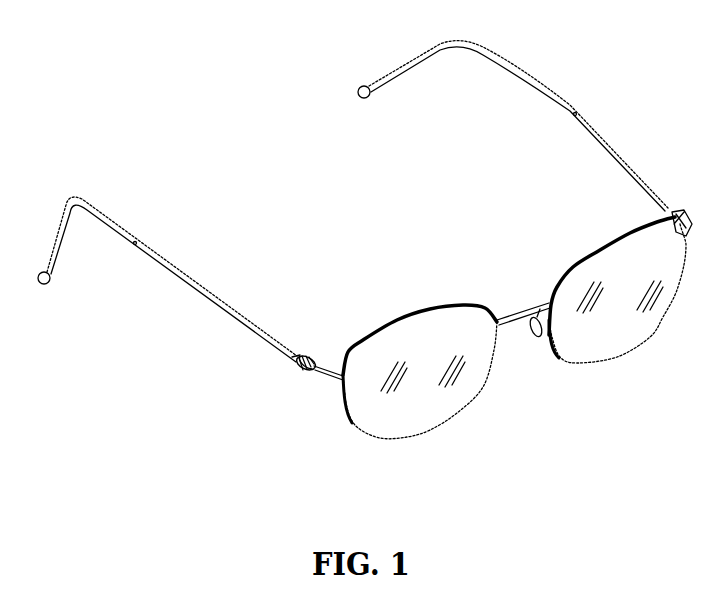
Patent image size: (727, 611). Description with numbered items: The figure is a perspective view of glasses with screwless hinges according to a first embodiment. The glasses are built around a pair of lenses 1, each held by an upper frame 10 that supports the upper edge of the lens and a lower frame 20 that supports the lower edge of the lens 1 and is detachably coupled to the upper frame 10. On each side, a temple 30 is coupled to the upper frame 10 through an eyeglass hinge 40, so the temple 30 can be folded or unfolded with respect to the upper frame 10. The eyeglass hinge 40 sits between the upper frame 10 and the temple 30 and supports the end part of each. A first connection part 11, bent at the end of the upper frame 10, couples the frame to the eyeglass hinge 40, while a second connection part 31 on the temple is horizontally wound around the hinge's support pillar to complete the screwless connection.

The lens 1 is at (365, 260).
The upper frame 10 is at (416, 310).
The first connection part 11 is at (304, 356).
The lower frame 20 is at (449, 432).
The temple 30 is at (160, 238).
The second connection part 31 is at (296, 367).
The eyeglass hinge 40 is at (300, 378).